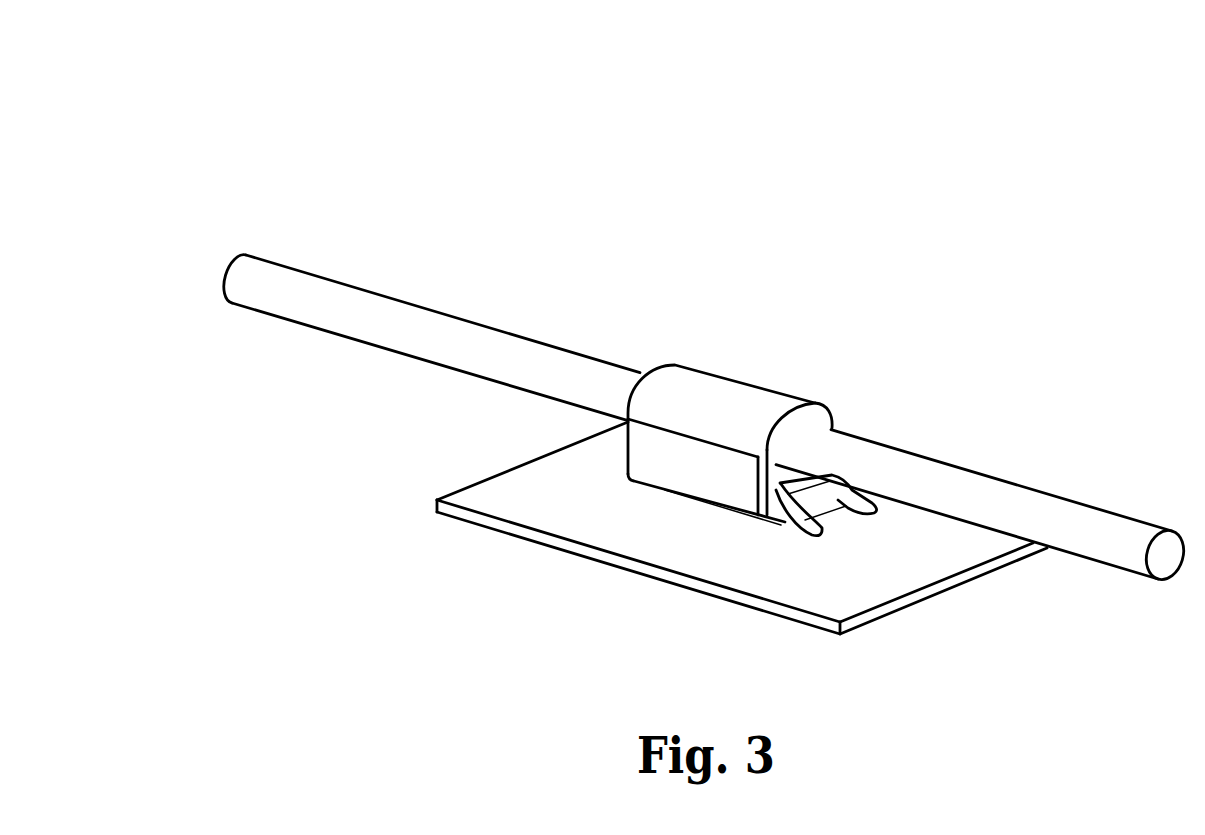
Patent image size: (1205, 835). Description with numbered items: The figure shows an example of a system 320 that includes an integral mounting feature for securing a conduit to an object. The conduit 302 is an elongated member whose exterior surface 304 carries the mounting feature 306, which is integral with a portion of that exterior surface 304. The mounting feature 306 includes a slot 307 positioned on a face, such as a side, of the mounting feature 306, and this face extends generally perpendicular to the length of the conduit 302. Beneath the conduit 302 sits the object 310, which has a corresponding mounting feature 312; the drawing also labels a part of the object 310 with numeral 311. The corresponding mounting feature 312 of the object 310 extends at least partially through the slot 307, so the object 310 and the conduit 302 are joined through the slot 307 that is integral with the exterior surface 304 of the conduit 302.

The system 320 is at (316, 64).
The conduit 302 is at (295, 262).
The exterior surface 304 is at (373, 290).
The mounting feature 306 is at (702, 359).
The slot 307 is at (768, 491).
The object 310 is at (495, 540).
The base plate upper surface 311 is at (502, 498).
The corresponding mounting feature 312 is at (817, 502).